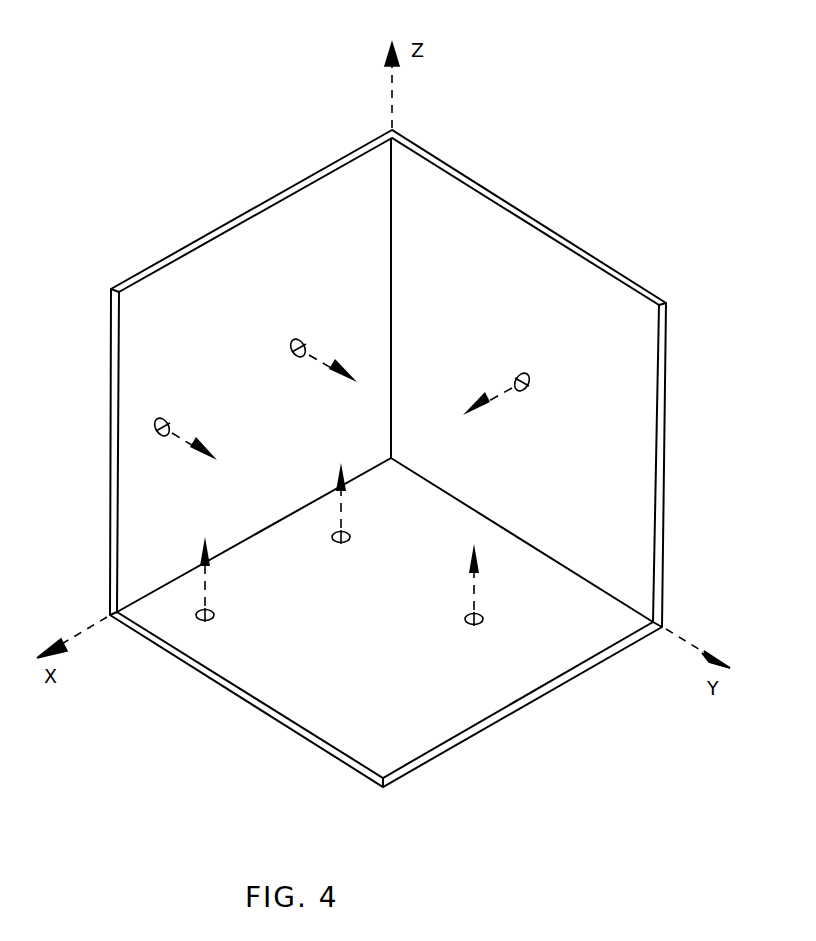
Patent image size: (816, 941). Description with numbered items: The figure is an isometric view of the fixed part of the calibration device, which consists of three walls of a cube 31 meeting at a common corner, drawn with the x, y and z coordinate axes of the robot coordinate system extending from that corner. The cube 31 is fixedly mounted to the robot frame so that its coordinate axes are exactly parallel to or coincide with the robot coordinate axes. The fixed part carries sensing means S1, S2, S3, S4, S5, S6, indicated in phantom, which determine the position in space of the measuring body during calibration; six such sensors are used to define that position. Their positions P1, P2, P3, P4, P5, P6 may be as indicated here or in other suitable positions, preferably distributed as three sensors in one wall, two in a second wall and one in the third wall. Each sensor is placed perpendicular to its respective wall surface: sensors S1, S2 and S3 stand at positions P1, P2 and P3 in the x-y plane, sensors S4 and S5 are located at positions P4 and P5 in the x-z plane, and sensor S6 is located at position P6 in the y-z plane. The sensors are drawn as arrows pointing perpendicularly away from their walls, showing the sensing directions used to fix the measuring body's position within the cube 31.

The cube 31 is at (582, 248).
The sensor position P1 is at (215, 625).
The sensor position P2 is at (346, 550).
The sensor position P3 is at (488, 630).
The sensor position P4 is at (159, 414).
The sensor position P5 is at (295, 335).
The sensor position P6 is at (538, 381).
The sensing means S1 is at (219, 571).
The sensing means S2 is at (355, 495).
The sensing means S3 is at (488, 577).
The sensing means S4 is at (198, 457).
The sensing means S5 is at (337, 380).
The sensing means S6 is at (487, 415).